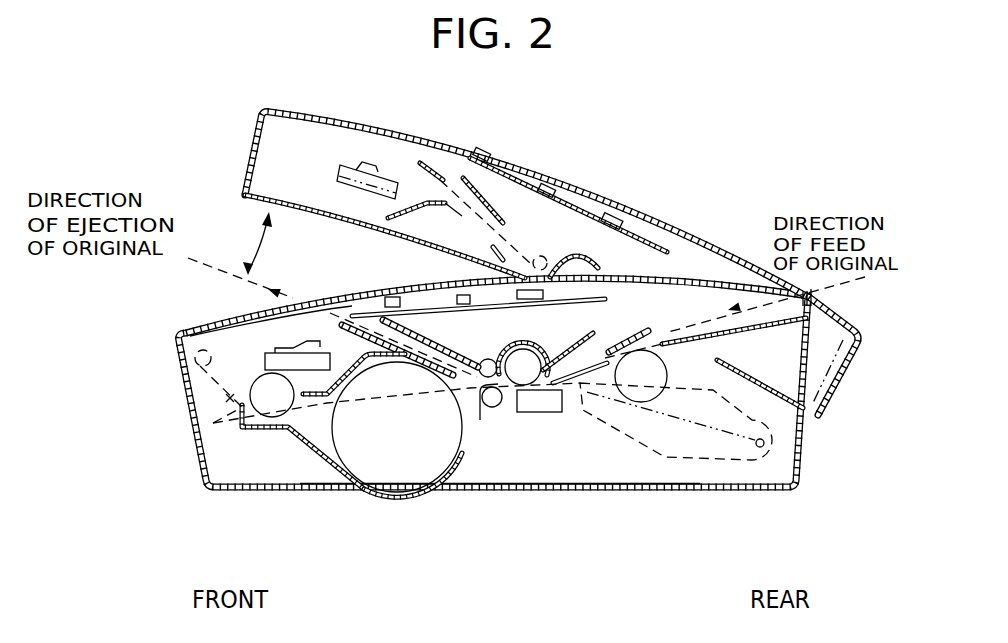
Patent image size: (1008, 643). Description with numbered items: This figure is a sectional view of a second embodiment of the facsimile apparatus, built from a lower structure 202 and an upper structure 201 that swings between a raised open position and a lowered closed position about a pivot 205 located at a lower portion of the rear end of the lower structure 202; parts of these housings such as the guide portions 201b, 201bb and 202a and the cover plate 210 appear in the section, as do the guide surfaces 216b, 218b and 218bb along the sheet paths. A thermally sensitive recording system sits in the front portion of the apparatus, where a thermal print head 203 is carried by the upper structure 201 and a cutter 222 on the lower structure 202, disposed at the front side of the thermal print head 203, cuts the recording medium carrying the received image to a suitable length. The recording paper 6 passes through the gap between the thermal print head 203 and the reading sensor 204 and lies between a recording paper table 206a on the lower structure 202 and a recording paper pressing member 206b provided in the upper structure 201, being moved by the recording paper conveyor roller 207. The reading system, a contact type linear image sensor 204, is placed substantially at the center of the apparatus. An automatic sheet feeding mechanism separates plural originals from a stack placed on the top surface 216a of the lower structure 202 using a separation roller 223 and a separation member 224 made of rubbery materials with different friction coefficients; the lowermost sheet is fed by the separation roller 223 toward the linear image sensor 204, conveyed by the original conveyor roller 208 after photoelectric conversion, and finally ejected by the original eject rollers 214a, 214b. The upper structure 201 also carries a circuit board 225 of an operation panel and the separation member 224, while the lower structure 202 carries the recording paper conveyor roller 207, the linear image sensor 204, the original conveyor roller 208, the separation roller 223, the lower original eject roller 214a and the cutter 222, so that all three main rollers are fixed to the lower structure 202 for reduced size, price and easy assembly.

The upper structure 201 is at (590, 190).
The cover inner guide plate 201b is at (613, 192).
The cover lower guide 201bb is at (735, 445).
The lower structure 202 is at (622, 465).
The main body bottom wall 202a is at (532, 470).
The thermal print head 203 is at (226, 330).
The contact type linear image sensor 204 is at (549, 405).
The pivot 205 is at (775, 446).
The recording paper table 206a is at (430, 490).
The recording paper pressing member 206b is at (362, 492).
The recording paper 6 is at (363, 493).
The recording paper conveyor roller 207 is at (275, 418).
The original conveyor roller 208 is at (523, 368).
The inner cover plate 210 is at (350, 312).
The original eject roller 214a is at (487, 422).
The original eject roller 214b is at (489, 358).
The top surface of the lower structure 216a is at (762, 326).
The lower feed guide 216b is at (630, 338).
The upper original guide 218b is at (452, 368).
The lower original guide 218bb is at (405, 357).
The cutter 222 is at (231, 480).
The separation roller 223 is at (641, 400).
The separation member 224 is at (806, 296).
The circuit board 225 is at (415, 297).